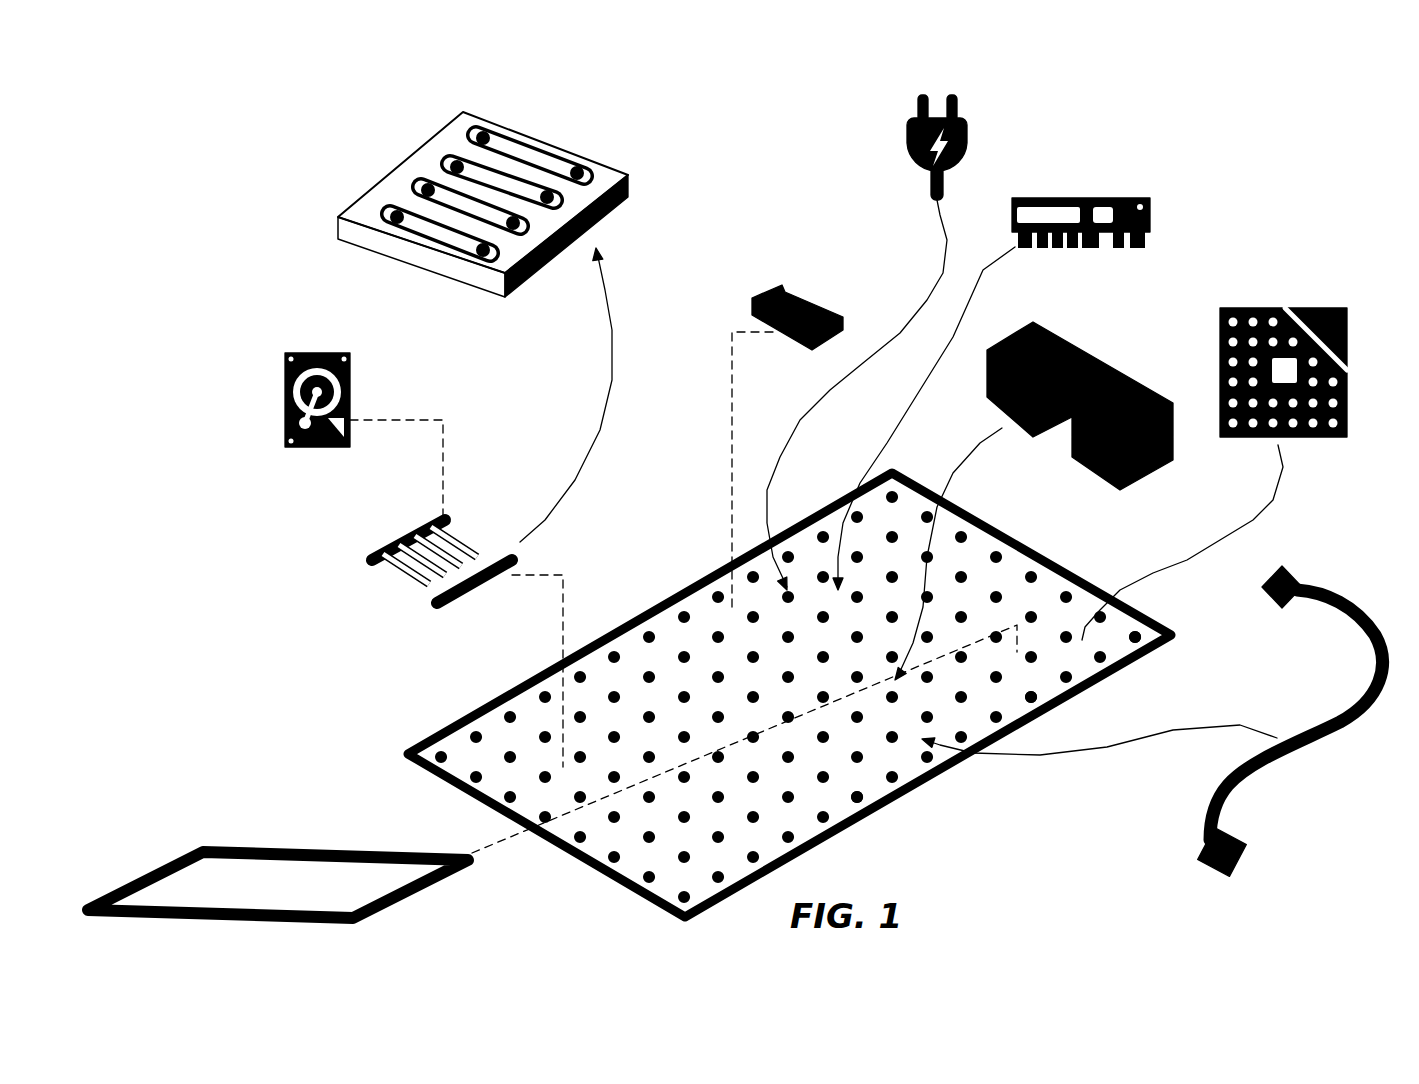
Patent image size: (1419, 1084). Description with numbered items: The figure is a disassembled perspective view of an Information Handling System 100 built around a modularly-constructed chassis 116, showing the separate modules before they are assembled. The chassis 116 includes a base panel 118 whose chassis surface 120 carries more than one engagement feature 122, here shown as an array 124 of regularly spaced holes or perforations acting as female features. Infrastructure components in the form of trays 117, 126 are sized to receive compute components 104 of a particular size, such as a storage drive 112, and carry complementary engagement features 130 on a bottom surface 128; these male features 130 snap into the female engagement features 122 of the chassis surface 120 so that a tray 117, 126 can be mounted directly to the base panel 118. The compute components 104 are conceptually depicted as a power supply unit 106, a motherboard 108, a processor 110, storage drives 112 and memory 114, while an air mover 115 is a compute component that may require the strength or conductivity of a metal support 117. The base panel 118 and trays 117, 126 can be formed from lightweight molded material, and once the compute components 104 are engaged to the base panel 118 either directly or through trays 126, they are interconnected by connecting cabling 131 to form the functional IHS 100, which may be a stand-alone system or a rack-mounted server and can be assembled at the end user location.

The Information Handling System 100 is at (200, 118).
The compute components 104 is at (1335, 212).
The power supply unit 106 is at (968, 118).
The motherboard 108 is at (360, 850).
The processor 110 is at (1348, 365).
The storage drives 112 is at (295, 353).
The memory 114 is at (1150, 200).
The air mover 115 is at (1132, 427).
The modularly-constructed chassis 116 is at (966, 778).
The metal support tray 117 is at (782, 285).
The base panel 118 is at (465, 720).
The chassis surface 120 is at (672, 625).
The engagement features 122 is at (1135, 657).
The array 124 is at (870, 782).
The tray 126 is at (450, 530).
The bottom surface 128 is at (413, 167).
The complementary engagement features 130 is at (485, 135).
The connecting cabling 131 is at (1352, 598).